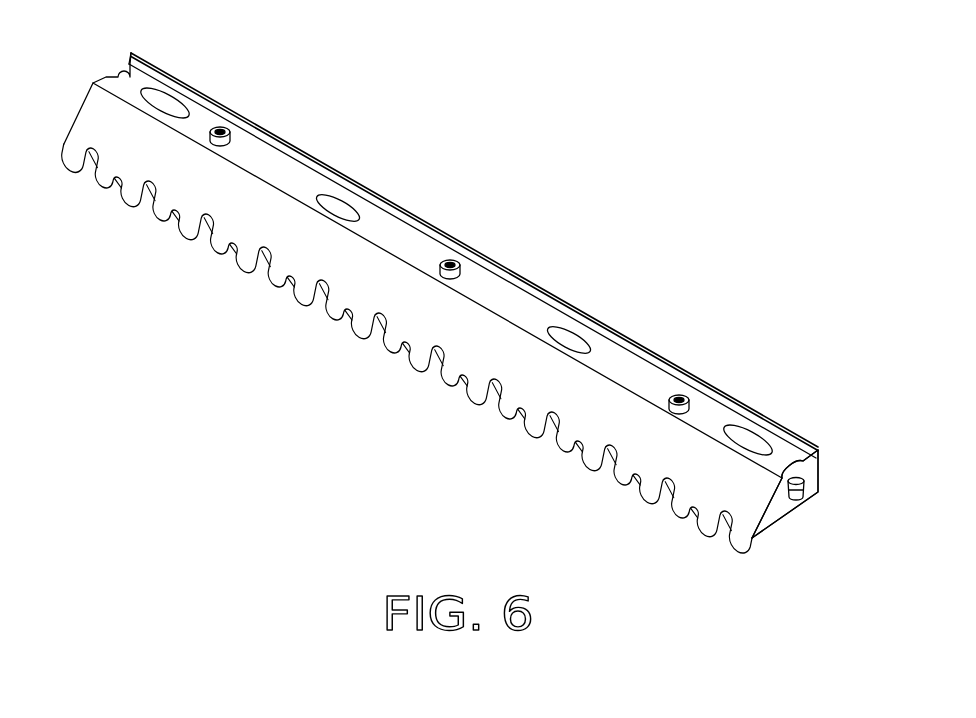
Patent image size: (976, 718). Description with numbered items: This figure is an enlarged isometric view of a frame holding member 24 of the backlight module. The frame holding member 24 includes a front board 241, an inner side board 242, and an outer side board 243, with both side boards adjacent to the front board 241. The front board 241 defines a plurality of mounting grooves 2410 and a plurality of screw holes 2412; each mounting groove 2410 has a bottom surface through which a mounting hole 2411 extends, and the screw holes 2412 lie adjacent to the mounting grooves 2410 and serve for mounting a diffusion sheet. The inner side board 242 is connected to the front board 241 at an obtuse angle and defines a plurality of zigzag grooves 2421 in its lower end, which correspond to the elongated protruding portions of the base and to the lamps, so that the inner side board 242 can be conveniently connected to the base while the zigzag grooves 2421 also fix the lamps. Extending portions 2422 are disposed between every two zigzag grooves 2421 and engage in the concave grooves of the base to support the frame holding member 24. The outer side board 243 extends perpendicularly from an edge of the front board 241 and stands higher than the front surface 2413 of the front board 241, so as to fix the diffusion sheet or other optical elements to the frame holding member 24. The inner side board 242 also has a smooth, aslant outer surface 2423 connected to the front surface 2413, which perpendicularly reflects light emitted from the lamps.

The frame holding member 24 is at (486, 223).
The front board 241 is at (622, 363).
The inner side board 242 is at (101, 127).
The outer side board 243 is at (604, 331).
The mounting grooves 2410 is at (339, 210).
The mounting hole 2411 is at (795, 498).
The screw holes 2412 is at (451, 261).
The front surface 2413 is at (713, 425).
The zigzag grooves 2421 is at (410, 341).
The extending portions 2422 is at (141, 201).
The outer surface 2423 is at (406, 346).